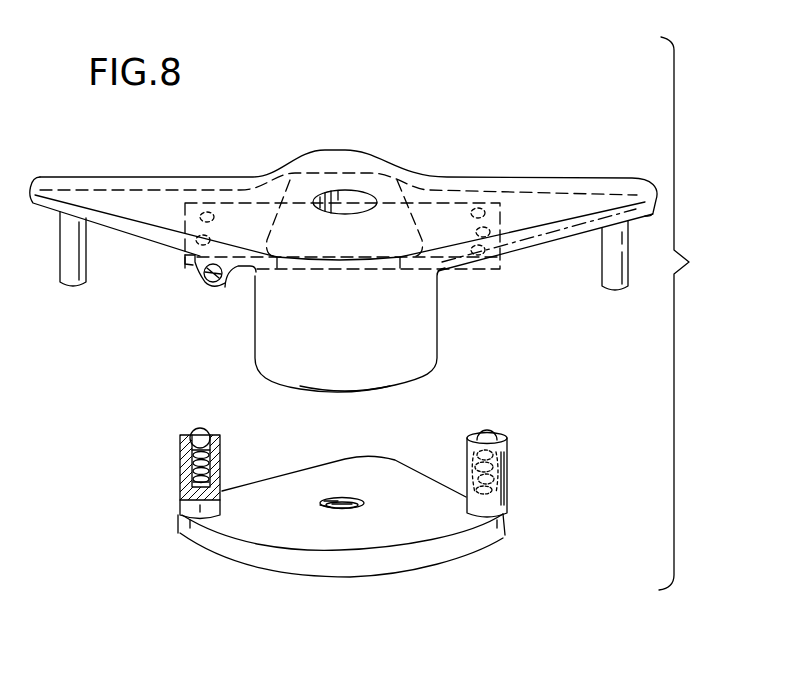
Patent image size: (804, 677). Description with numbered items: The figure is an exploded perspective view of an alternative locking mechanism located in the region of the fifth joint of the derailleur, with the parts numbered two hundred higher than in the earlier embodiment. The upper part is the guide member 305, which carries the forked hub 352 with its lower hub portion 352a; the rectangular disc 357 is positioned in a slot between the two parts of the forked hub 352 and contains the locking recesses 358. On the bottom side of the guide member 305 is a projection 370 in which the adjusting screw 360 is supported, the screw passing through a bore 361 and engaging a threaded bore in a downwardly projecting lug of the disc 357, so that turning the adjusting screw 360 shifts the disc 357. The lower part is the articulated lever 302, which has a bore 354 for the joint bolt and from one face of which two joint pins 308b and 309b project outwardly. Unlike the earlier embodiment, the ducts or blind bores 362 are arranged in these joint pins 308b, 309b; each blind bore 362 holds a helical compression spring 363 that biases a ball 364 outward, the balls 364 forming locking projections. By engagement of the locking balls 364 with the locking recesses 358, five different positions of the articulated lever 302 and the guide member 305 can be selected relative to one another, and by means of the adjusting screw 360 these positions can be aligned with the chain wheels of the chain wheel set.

The articulated lever 302 is at (414, 563).
The guide member 305 is at (505, 182).
The joint pin 308b is at (183, 495).
The joint pin 309b is at (502, 504).
The forked hub 352 is at (437, 327).
The hub bottom 352a is at (358, 377).
The bore 354 is at (363, 501).
The disc 357 is at (497, 268).
The locking recesses 358 is at (200, 215).
The adjusting screw 360 is at (217, 282).
The bore 361 is at (195, 265).
The blind bores 362 is at (218, 459).
The helical compression springs 363 is at (192, 467).
The balls 364 is at (196, 429).
The projection 370 is at (231, 272).